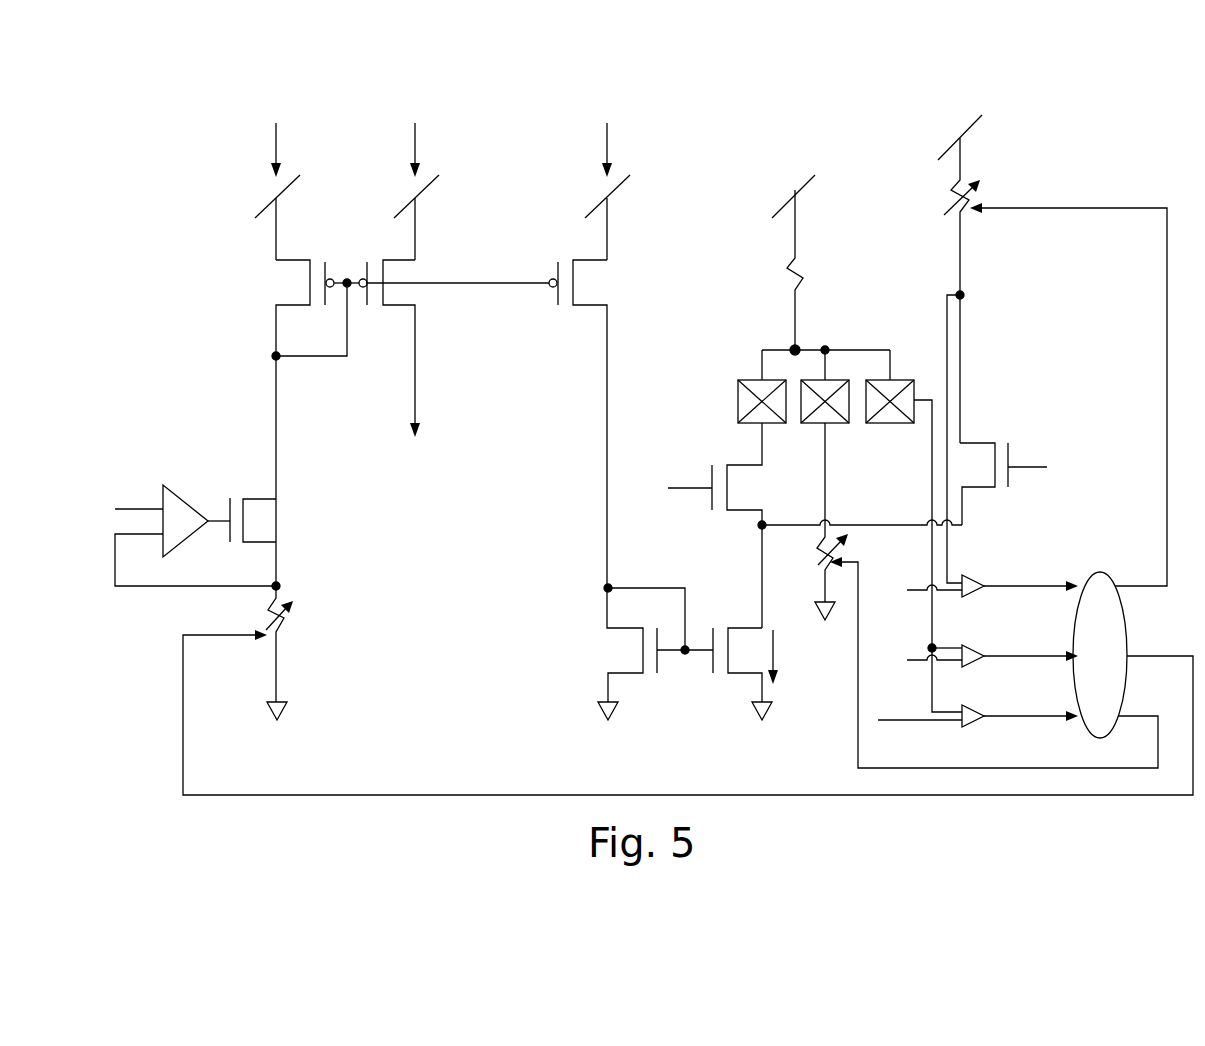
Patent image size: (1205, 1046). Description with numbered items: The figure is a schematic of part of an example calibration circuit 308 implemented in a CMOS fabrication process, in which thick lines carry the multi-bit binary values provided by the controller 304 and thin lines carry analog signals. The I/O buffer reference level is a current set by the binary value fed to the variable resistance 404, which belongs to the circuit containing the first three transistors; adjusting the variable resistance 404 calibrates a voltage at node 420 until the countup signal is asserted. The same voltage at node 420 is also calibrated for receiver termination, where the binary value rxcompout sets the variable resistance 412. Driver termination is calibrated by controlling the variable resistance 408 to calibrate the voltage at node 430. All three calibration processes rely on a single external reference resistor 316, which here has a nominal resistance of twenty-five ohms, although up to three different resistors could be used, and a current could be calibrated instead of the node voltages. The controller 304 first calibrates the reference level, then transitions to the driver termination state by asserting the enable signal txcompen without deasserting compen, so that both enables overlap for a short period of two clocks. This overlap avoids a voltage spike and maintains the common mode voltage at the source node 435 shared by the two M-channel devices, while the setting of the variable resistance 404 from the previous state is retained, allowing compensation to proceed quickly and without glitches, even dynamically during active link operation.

The calibration circuit 308 is at (722, 107).
The external reference resistor 316 is at (798, 270).
The node 420 is at (758, 366).
The source node 435 is at (760, 528).
The variable resistance 412 is at (823, 573).
The variable resistance 404 is at (282, 631).
The variable resistance 408 is at (958, 218).
The node 430 is at (962, 341).
The controller 304 is at (1118, 684).